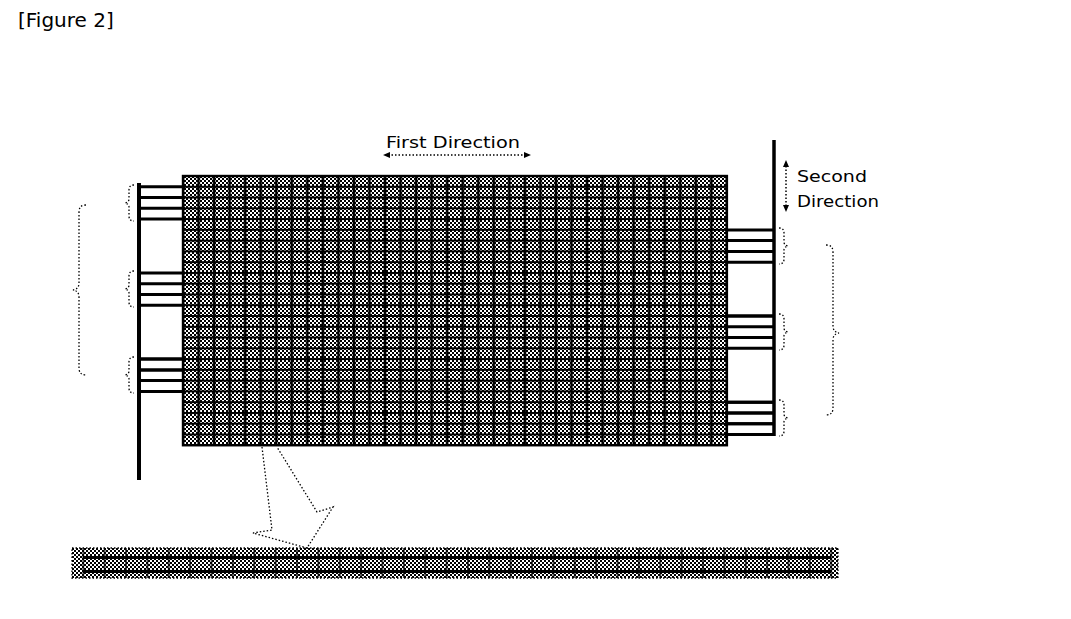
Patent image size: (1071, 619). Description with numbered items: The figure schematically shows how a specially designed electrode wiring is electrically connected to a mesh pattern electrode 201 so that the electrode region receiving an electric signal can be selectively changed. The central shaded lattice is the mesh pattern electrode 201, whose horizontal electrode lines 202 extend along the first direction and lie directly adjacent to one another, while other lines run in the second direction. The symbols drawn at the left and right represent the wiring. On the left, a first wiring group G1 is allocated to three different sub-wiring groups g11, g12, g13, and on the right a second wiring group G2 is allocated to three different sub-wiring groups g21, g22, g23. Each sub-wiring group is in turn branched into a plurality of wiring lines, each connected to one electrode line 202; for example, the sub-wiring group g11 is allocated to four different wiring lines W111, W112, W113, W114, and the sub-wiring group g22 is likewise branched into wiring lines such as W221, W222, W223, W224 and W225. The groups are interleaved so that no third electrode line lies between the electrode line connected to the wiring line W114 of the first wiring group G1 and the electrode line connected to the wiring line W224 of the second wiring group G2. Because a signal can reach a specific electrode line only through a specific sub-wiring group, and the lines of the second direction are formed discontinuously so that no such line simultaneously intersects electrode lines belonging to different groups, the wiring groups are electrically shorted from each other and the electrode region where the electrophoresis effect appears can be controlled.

The mesh pattern electrode 201 is at (272, 170).
The electrode lines 202 is at (673, 183).
The sub-wiring group g11 is at (115, 203).
The sub-wiring group g12 is at (115, 289).
The sub-wiring group g13 is at (115, 375).
The first wiring group G1 is at (67, 290).
The sub-wiring group g21 is at (797, 246).
The sub-wiring group g22 is at (797, 332).
The sub-wiring group g23 is at (797, 418).
The second wiring group G2 is at (843, 330).
The wiring line W111 is at (150, 393).
The wiring line W112 is at (152, 373).
The wiring line W113 is at (158, 384).
The wiring line W114 is at (158, 356).
The width of first finger of second electrode W221 is at (738, 442).
The width of second finger of second electrode W222 is at (751, 441).
The width of third finger of second electrode W223 is at (752, 400).
The wiring line W224 is at (752, 314).
The width of fifth finger of second electrode W225 is at (755, 438).